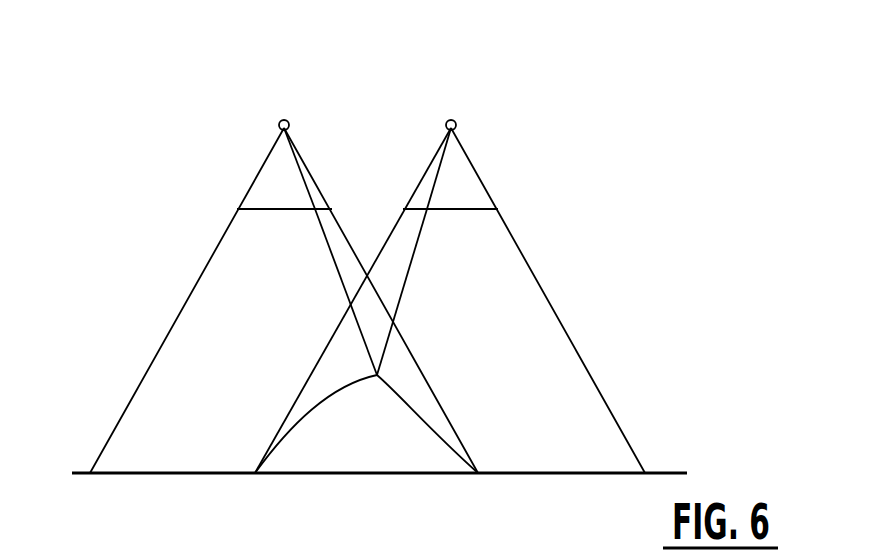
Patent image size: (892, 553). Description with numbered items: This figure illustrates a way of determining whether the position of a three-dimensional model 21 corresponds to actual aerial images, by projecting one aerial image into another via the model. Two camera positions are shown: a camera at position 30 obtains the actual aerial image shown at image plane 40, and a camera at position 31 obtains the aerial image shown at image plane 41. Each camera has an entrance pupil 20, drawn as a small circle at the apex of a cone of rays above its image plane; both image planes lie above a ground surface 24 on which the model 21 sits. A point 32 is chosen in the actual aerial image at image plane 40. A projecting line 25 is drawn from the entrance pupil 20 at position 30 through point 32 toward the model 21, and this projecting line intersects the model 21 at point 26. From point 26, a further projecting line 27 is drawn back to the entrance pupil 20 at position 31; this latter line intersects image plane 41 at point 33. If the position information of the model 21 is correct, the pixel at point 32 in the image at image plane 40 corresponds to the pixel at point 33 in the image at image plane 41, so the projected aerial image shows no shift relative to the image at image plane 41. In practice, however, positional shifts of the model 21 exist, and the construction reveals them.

The entrance pupil 20 is at (290, 121).
The 3D model 21 is at (423, 418).
The support surface 24 is at (667, 472).
The projecting line 25 is at (403, 284).
The point 26 is at (373, 378).
The further projecting line 27 is at (363, 343).
The camera position 30 is at (477, 72).
The camera position 31 is at (257, 76).
The point 32 is at (428, 211).
The point 33 is at (316, 212).
The image plane 40 is at (468, 207).
The image plane 41 is at (266, 209).